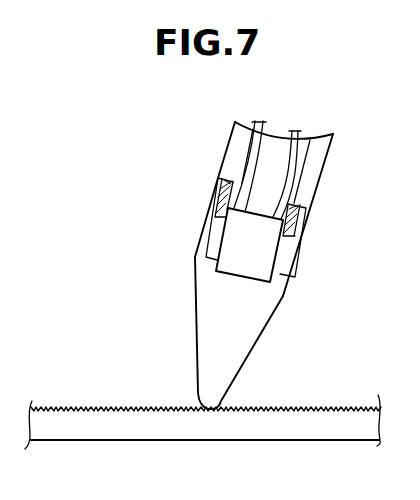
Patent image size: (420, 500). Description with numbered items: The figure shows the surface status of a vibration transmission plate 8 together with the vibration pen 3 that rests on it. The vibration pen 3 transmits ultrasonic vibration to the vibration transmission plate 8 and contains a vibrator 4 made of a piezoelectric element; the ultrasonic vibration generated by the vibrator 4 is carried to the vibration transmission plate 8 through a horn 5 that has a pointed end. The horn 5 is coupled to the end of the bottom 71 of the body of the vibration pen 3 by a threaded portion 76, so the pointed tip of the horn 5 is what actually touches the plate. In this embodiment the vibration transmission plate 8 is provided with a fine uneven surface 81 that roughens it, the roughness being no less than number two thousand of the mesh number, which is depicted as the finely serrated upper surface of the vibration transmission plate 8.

The vibration pen 3 is at (222, 167).
The bottom of a body of the vibration pen 71 is at (322, 160).
The threaded portion 76 is at (302, 222).
The vibrator 4 is at (223, 268).
The horn 5 is at (262, 336).
The fine uneven surface 81 is at (316, 408).
The vibration transmission plate 8 is at (300, 428).